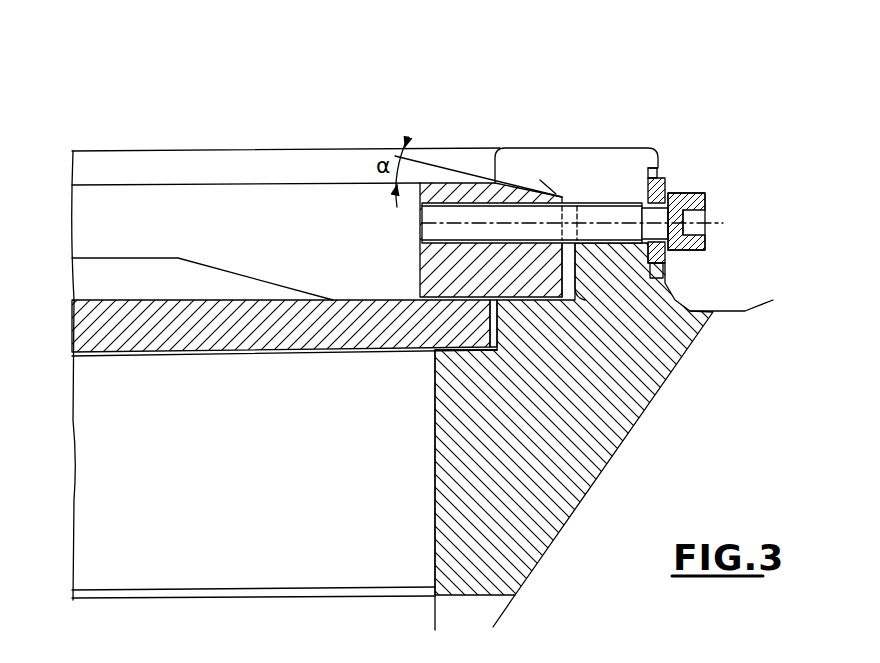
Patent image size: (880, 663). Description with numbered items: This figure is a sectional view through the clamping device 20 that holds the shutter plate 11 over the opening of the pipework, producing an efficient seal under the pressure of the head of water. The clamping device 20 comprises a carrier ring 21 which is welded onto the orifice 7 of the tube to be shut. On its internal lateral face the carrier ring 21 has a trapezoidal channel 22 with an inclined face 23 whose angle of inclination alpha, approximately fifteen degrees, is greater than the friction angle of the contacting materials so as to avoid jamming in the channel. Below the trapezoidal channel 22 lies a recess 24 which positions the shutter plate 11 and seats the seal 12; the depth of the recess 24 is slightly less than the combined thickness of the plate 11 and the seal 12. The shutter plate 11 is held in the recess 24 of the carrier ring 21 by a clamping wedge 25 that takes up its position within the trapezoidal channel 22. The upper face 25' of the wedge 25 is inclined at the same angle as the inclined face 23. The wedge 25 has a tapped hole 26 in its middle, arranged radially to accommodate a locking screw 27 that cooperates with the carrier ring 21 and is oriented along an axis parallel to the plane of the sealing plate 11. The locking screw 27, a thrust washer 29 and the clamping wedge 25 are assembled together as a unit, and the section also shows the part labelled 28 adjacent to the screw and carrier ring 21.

The orifice 7 is at (95, 402).
The shutter plate 11 is at (228, 352).
The seal 12 is at (470, 352).
The clamping device 20 is at (655, 139).
The carrier ring 21 is at (645, 390).
The trapezoidal channel 22 is at (575, 291).
The inclined face 23 is at (555, 192).
The recess 24 is at (497, 330).
The clamping wedge 25 is at (452, 240).
The upper face of wedge 25' is at (450, 193).
The tapped hole 26 is at (419, 236).
The locking screw 27 is at (688, 200).
The washer 28 is at (665, 262).
The thrust washer 29 is at (598, 165).